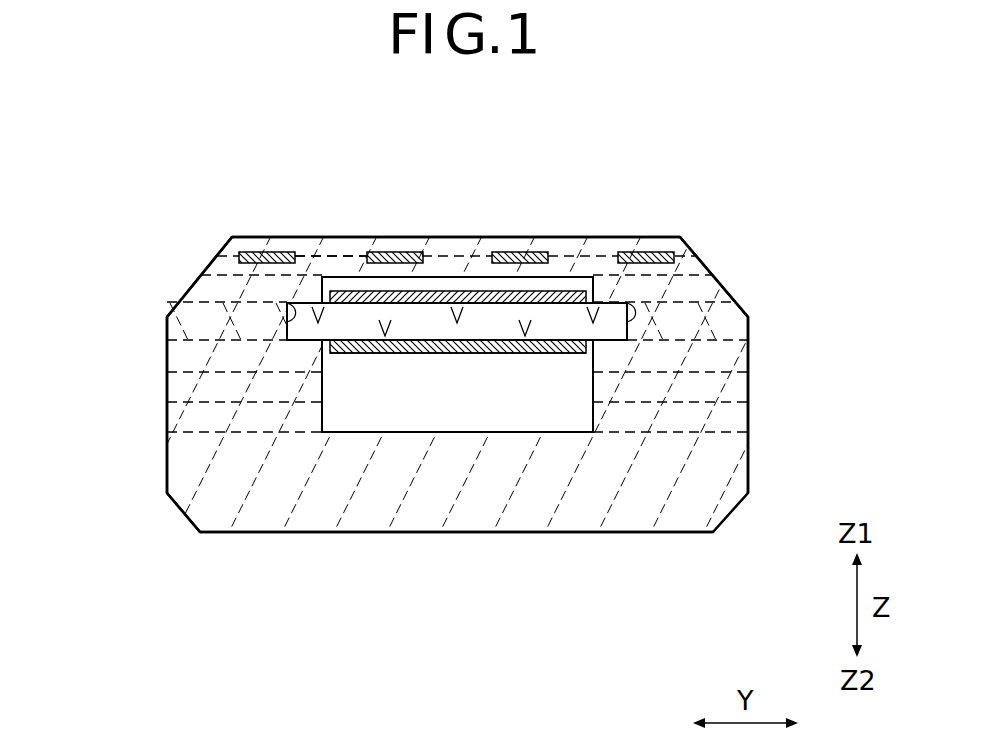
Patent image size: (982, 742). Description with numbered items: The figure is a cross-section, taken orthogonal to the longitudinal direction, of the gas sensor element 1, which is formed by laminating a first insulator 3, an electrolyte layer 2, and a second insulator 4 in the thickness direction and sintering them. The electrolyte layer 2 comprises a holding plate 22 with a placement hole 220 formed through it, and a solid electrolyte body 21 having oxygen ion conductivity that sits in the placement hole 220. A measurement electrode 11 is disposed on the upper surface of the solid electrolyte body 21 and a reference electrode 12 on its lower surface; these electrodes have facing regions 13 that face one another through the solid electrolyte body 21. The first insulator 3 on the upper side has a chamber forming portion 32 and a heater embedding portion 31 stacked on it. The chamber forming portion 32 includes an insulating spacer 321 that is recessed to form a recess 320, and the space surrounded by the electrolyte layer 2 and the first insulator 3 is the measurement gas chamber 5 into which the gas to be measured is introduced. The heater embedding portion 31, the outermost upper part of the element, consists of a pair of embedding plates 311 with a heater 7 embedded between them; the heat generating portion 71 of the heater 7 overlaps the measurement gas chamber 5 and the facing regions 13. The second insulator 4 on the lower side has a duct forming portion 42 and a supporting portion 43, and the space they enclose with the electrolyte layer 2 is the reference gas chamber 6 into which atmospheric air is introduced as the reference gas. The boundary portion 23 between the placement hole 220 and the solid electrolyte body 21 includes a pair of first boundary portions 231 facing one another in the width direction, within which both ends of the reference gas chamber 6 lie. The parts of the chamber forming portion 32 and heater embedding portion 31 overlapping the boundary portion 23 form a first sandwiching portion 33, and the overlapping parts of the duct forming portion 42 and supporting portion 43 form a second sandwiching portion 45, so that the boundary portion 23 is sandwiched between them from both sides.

The gas sensor element 1 is at (696, 169).
The electrolyte layer 2 is at (553, 404).
The solid electrolyte body 21 is at (565, 307).
The holding plate 22 is at (685, 322).
The placement hole 220 is at (287, 322).
The boundary portion 23 is at (487, 476).
The first boundary portions 231 is at (287, 322).
The first insulator 3 is at (447, 386).
The heater embedding portion 31 is at (663, 243).
The embedding plates 311 is at (223, 267).
The chamber forming portion 32 is at (667, 290).
The insulating spacer 321 is at (213, 290).
The first sandwiching portion 33 is at (282, 290).
The recess 320 is at (332, 264).
The second insulator 4 is at (524, 478).
The duct forming portion 42 is at (225, 390).
The supporting portion 43 is at (203, 487).
The second sandwiching portion 45 is at (287, 349).
The measurement gas chamber 5 is at (456, 283).
The reference gas chamber 6 is at (438, 405).
The heater 7 is at (540, 250).
The heat generating portion 71 is at (512, 253).
The measurement electrode 11 is at (362, 287).
The reference electrode 12 is at (350, 353).
The facing regions 13 is at (400, 297).